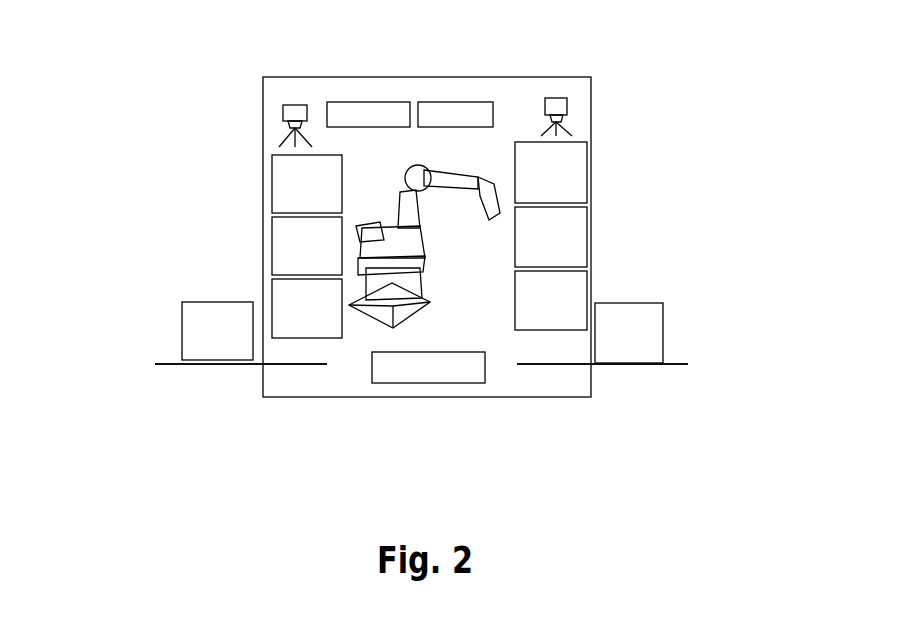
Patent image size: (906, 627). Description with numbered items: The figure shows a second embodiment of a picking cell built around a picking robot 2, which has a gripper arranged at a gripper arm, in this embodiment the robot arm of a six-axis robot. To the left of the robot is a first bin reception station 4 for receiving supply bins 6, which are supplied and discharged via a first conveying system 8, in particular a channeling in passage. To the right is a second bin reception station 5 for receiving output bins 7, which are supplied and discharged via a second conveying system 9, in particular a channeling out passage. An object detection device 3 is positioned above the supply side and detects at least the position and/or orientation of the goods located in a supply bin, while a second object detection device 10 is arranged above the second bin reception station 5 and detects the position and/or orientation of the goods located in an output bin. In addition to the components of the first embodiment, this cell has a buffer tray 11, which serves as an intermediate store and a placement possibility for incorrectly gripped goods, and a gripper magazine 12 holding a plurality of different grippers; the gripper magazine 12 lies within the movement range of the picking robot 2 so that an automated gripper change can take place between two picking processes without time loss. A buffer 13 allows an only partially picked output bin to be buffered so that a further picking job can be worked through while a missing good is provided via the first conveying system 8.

The picking robot 2 is at (463, 170).
The object detection device 3 is at (285, 112).
The first bin reception station 4 is at (280, 294).
The second bin reception station 5 is at (575, 178).
The supply bin 6 is at (188, 312).
The output bin 7 is at (655, 320).
The first conveying system 8 is at (205, 399).
The second conveying system 9 is at (620, 399).
The second object detection device 10 is at (567, 103).
The buffer tray 11 is at (368, 115).
The gripper magazine 12 is at (455, 115).
The buffer 13 is at (428, 367).